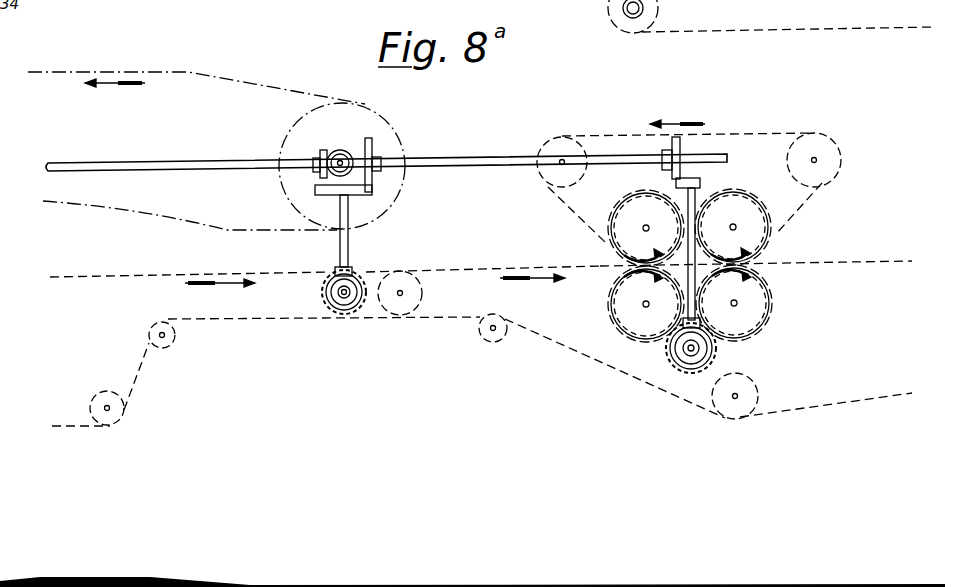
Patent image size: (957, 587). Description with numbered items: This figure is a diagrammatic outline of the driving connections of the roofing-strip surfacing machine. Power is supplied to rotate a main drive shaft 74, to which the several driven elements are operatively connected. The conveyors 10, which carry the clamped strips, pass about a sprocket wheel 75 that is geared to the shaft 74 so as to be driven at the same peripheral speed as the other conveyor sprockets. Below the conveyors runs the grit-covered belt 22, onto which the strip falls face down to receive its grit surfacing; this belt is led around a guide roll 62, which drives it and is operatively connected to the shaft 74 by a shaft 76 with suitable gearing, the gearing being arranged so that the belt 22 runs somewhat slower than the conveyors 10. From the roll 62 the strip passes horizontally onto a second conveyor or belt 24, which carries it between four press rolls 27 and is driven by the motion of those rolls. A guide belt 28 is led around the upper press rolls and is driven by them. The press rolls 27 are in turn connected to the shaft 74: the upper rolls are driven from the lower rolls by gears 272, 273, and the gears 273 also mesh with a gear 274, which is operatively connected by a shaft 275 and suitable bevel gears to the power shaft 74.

The conveyors 10 is at (100, 73).
The grit-covered belt 22 is at (181, 276).
The conveyor or belt 24 is at (452, 271).
The press rolls 27 is at (694, 262).
The guide belt 28 is at (590, 134).
The guide roll 62 is at (356, 313).
The main drive shaft 74 is at (170, 166).
The sprocket wheel 75 is at (380, 133).
The shaft 76 is at (340, 246).
The gear 272 is at (773, 216).
The gear 273 is at (777, 314).
The gear 274 is at (718, 364).
The shaft 275 is at (692, 200).